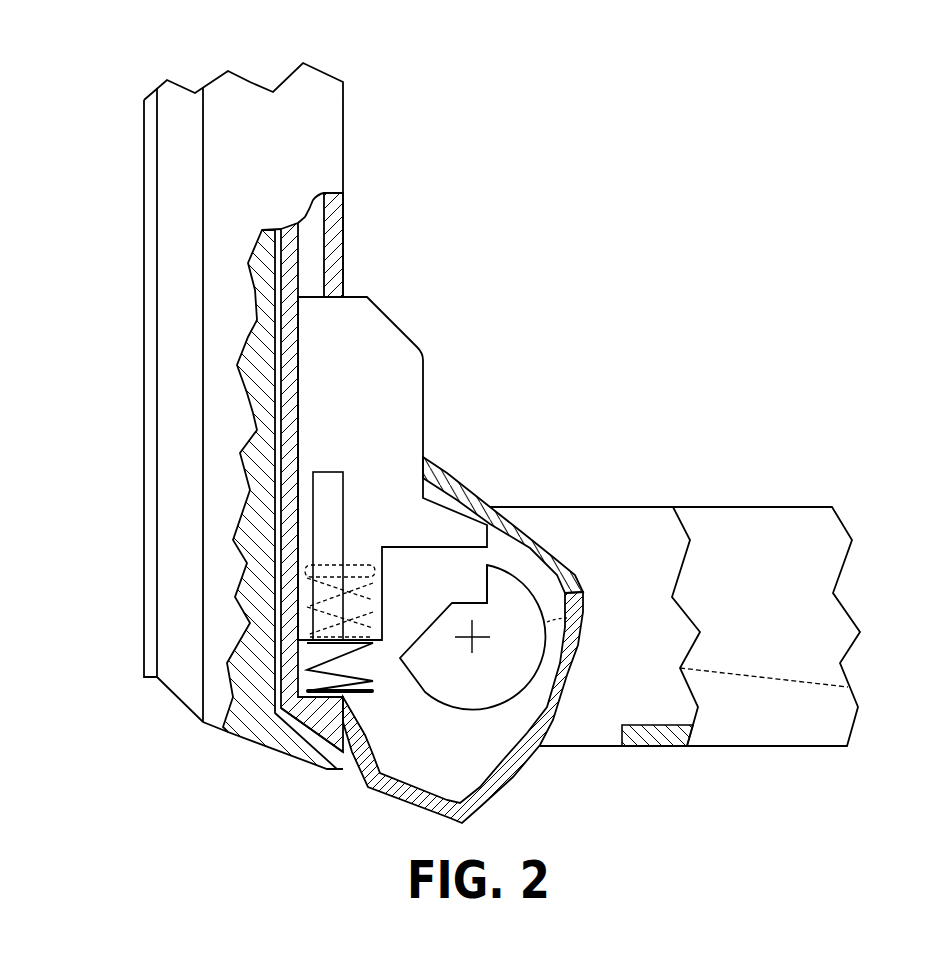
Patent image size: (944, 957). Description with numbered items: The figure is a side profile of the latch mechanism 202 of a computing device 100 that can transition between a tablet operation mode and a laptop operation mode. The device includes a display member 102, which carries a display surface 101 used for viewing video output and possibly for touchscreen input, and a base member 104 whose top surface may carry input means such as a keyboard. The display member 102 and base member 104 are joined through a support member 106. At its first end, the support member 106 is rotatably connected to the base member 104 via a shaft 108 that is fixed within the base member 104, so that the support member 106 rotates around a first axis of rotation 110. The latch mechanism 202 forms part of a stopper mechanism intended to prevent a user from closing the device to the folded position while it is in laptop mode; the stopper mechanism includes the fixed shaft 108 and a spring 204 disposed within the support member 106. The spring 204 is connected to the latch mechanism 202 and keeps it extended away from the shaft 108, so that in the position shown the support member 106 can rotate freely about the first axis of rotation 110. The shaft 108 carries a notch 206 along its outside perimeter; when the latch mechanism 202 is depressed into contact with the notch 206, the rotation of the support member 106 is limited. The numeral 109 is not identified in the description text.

The computing device 100 is at (583, 196).
The display surface 101 is at (144, 168).
The display member 102 is at (248, 82).
The base member 104 is at (745, 507).
The support member 106 is at (345, 240).
The shaft 108 is at (475, 712).
The curved bearing shell 109 is at (567, 620).
The first axis of rotation 110 is at (468, 645).
The latch mechanism 202 is at (423, 390).
The spring 204 is at (367, 700).
The notch 206 is at (487, 585).